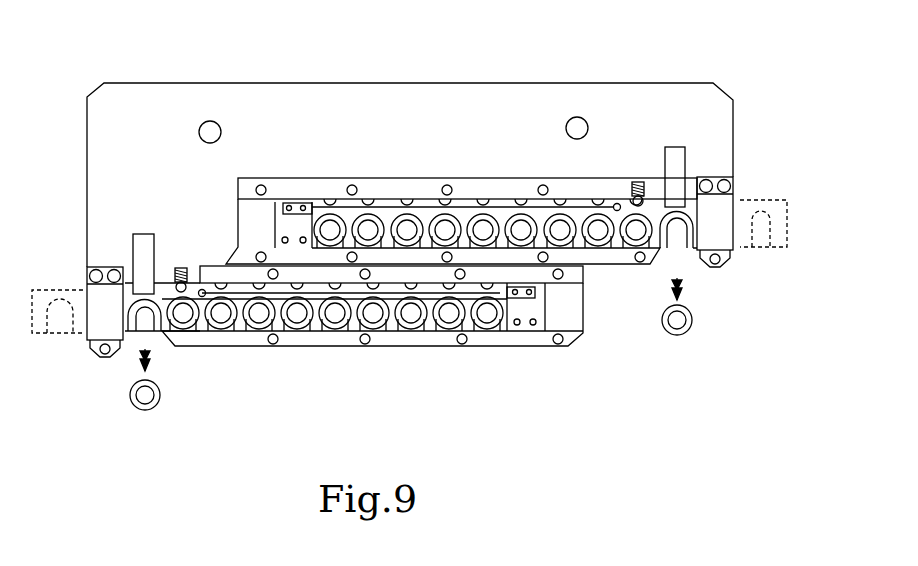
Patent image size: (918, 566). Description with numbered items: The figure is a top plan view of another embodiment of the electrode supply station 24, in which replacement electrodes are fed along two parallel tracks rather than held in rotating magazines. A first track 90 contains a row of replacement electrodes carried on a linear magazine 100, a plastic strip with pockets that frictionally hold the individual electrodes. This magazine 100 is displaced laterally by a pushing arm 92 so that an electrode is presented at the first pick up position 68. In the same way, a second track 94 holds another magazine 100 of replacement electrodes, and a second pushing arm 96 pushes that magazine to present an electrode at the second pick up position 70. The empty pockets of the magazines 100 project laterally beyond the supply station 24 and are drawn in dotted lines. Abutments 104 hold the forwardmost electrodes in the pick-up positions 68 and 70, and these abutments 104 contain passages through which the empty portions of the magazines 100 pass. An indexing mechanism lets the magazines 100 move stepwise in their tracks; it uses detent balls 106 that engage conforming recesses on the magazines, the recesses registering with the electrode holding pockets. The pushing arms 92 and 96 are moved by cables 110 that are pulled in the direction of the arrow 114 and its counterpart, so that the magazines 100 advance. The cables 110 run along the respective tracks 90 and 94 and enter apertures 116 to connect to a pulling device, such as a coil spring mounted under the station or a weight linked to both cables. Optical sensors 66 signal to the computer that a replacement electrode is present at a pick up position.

The electrode supply station 24 is at (503, 70).
The optical sensors 66 is at (140, 246).
The first pick up position 68 is at (145, 320).
The second pick up position 70 is at (677, 232).
The first track 90 is at (198, 332).
The pushing arm 92 is at (523, 310).
The second track 94 is at (464, 208).
The second pushing arm 96 is at (278, 213).
The linear magazine 100 is at (421, 214).
The abutments 104 is at (98, 346).
The detent balls 106 is at (182, 267).
The cables 110 is at (512, 213).
The arrow 114 is at (258, 228).
The apertures 116 is at (201, 290).